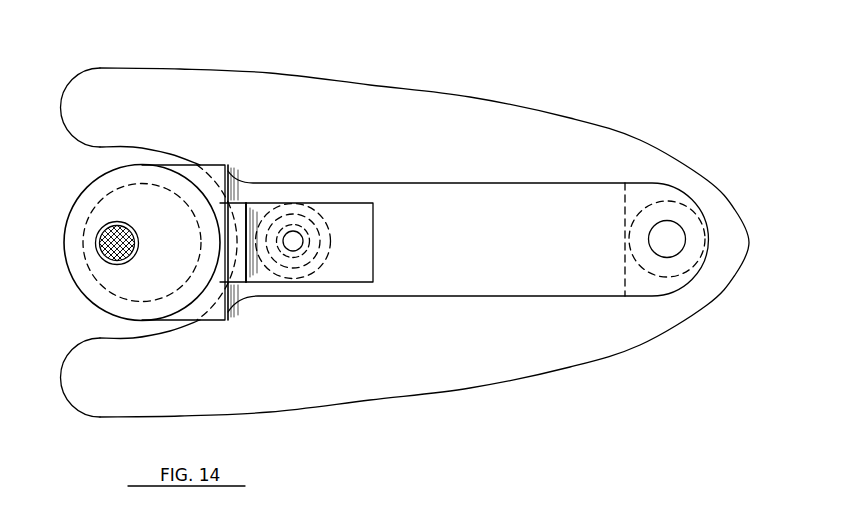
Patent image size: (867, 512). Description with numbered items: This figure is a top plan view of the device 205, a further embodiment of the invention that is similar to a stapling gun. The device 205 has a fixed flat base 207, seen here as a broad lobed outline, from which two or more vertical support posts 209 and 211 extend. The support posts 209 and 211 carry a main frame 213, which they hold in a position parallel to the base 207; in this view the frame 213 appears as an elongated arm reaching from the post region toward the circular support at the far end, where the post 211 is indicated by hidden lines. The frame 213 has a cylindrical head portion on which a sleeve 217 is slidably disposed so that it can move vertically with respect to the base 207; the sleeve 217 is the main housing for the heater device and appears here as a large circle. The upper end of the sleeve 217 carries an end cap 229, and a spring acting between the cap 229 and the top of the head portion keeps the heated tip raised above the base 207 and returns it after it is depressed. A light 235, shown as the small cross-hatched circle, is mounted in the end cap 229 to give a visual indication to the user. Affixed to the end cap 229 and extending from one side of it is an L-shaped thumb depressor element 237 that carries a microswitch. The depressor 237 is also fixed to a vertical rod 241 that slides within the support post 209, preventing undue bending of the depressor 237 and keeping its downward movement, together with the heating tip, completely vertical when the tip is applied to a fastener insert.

The device 205 is at (631, 91).
The fixed flat base 207 is at (608, 337).
The vertical support post 209 is at (322, 265).
The vertical support post 211 is at (640, 267).
The main frame 213 is at (528, 200).
The sleeve 217 is at (113, 187).
The end cap 229 is at (77, 273).
The light 235 is at (100, 232).
The L-shaped thumb depressor element 237 is at (355, 240).
The vertical rod 241 is at (298, 207).